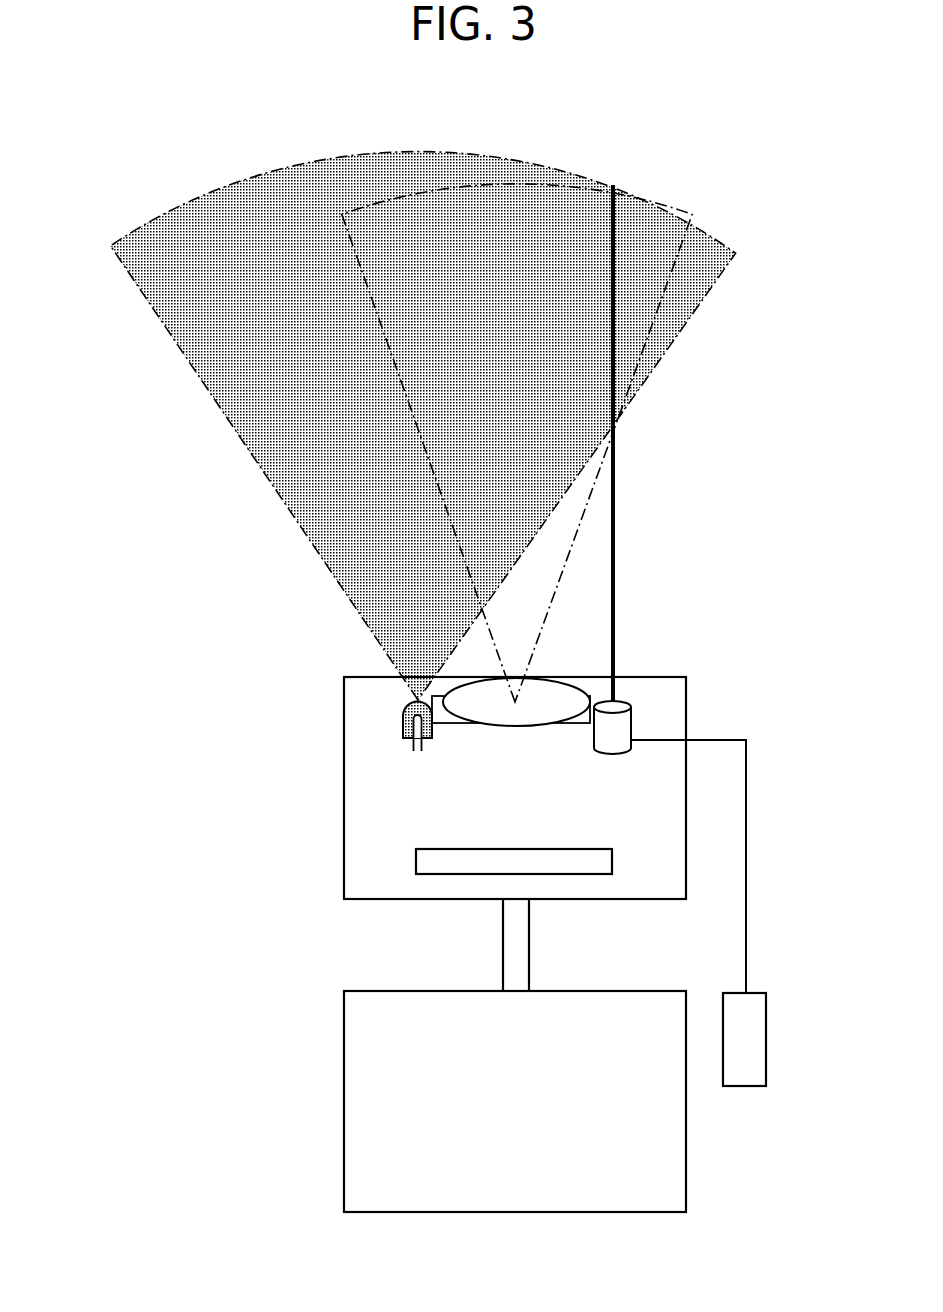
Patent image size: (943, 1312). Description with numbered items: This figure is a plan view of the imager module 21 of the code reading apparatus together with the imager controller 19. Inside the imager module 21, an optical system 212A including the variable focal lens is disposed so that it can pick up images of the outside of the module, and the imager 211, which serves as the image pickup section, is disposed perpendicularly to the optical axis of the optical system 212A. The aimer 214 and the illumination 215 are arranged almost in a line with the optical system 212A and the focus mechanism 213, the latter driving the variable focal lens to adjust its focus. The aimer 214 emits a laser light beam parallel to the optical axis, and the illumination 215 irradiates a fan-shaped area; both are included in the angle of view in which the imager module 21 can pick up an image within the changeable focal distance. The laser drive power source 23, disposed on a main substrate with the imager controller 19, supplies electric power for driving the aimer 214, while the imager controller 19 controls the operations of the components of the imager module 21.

The imager controller 19 is at (344, 1170).
The imager module 21 is at (343, 860).
The imager 211 is at (597, 875).
The optical system 212A is at (530, 725).
The focus mechanism 213 is at (418, 700).
The aimer 214 is at (631, 718).
The illumination 215 is at (407, 720).
The laser drive power source 23 is at (767, 1013).